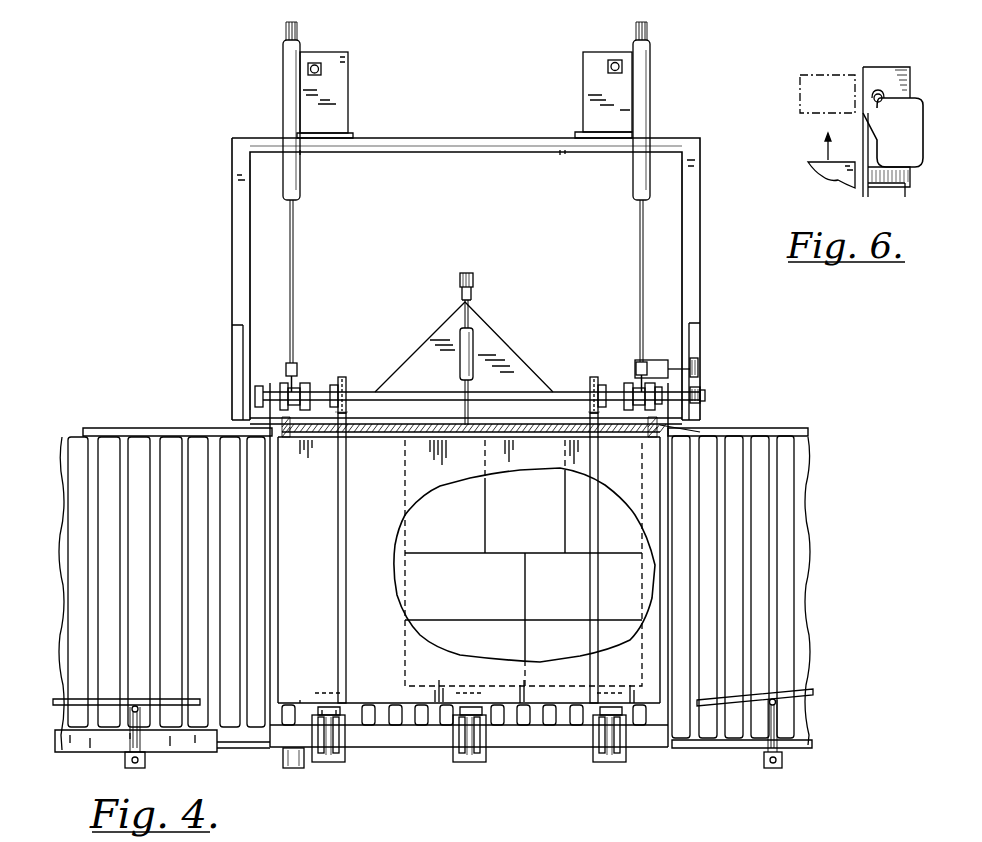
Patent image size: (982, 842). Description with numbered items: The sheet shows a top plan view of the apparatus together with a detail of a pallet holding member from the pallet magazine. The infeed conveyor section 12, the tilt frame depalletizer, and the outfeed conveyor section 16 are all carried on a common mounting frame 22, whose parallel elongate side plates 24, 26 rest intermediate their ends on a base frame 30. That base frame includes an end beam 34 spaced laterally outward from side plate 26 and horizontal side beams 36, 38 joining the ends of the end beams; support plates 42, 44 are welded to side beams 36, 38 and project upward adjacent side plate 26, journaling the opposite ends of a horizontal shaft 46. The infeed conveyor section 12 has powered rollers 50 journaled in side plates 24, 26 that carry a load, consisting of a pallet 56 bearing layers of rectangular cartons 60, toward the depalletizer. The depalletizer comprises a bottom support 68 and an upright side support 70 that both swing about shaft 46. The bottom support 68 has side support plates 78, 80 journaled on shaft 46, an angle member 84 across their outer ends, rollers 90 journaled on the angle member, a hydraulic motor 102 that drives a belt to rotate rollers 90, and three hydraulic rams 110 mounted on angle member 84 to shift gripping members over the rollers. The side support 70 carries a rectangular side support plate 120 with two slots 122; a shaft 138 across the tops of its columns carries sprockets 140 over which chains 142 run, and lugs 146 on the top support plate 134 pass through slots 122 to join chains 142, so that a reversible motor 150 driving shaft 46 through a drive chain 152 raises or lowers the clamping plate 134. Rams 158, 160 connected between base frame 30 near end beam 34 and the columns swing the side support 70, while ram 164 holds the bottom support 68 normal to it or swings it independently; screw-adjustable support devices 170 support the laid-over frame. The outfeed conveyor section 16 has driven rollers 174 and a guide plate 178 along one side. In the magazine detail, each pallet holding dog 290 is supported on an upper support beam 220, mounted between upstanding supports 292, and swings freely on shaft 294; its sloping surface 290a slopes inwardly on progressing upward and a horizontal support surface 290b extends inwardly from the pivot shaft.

In FIG. 4, the infeed conveyor section 12 is at (97, 378).
In FIG. 4, the outfeed conveyor section 16 is at (818, 450).
In FIG. 4, the mounting frame 22 is at (162, 332).
In FIG. 4, the side plate 24 is at (232, 747).
In FIG. 4, the side plate 26 is at (160, 428).
In FIG. 4, the base frame 30 is at (704, 288).
In FIG. 4, the end beam 34 is at (470, 138).
In FIG. 4, the side beam 36 is at (248, 190).
In FIG. 4, the side beam 38 is at (690, 200).
In FIG. 4, the support plate 42 is at (247, 337).
In FIG. 4, the support plate 44 is at (691, 334).
In FIG. 4, the shaft 46 is at (263, 386).
In FIG. 4, the rollers 50 is at (103, 463).
In FIG. 6, the pallet 56 is at (800, 78).
In FIG. 4, the cartons 60 is at (418, 630).
In FIG. 4, the bottom support 68 is at (393, 748).
In FIG. 4, the side support 70 is at (582, 332).
In FIG. 4, the side support plate 78 is at (285, 630).
In FIG. 4, the side support plate 80 is at (665, 657).
In FIG. 4, the angle member 84 is at (584, 745).
In FIG. 4, the rollers 90 is at (576, 727).
In FIG. 4, the hydraulic motor 102 is at (296, 770).
In FIG. 4, the hydraulic rams 110 is at (328, 762).
In FIG. 4, the side support plate 120 is at (397, 427).
In FIG. 4, the slots 122 is at (350, 437).
In FIG. 4, the top support plate 134 is at (346, 528).
In FIG. 4, the shaft 138 is at (397, 397).
In FIG. 4, the sprockets 140 is at (340, 383).
In FIG. 4, the chains 142 is at (339, 378).
In FIG. 4, the lugs 146 is at (340, 437).
In FIG. 4, the reversible motor 150 is at (662, 360).
In FIG. 4, the drive chain 152 is at (700, 372).
In FIG. 4, the ram 158 is at (293, 165).
In FIG. 4, the ram 160 is at (640, 165).
In FIG. 4, the ram 164 is at (466, 342).
In FIG. 4, the screw-adjustable support devices 170 is at (318, 60).
In FIG. 4, the rollers 174 is at (785, 560).
In FIG. 4, the guide plate 178 is at (808, 690).
In FIG. 6, the upper support beam 220 is at (905, 188).
In FIG. 6, the pallet holding dog 290 is at (912, 136).
In FIG. 6, the sloping surface 290a is at (855, 128).
In FIG. 6, the support surface 290b is at (855, 113).
In FIG. 6, the upstanding supports 292 is at (895, 68).
In FIG. 6, the shaft 294 is at (876, 90).